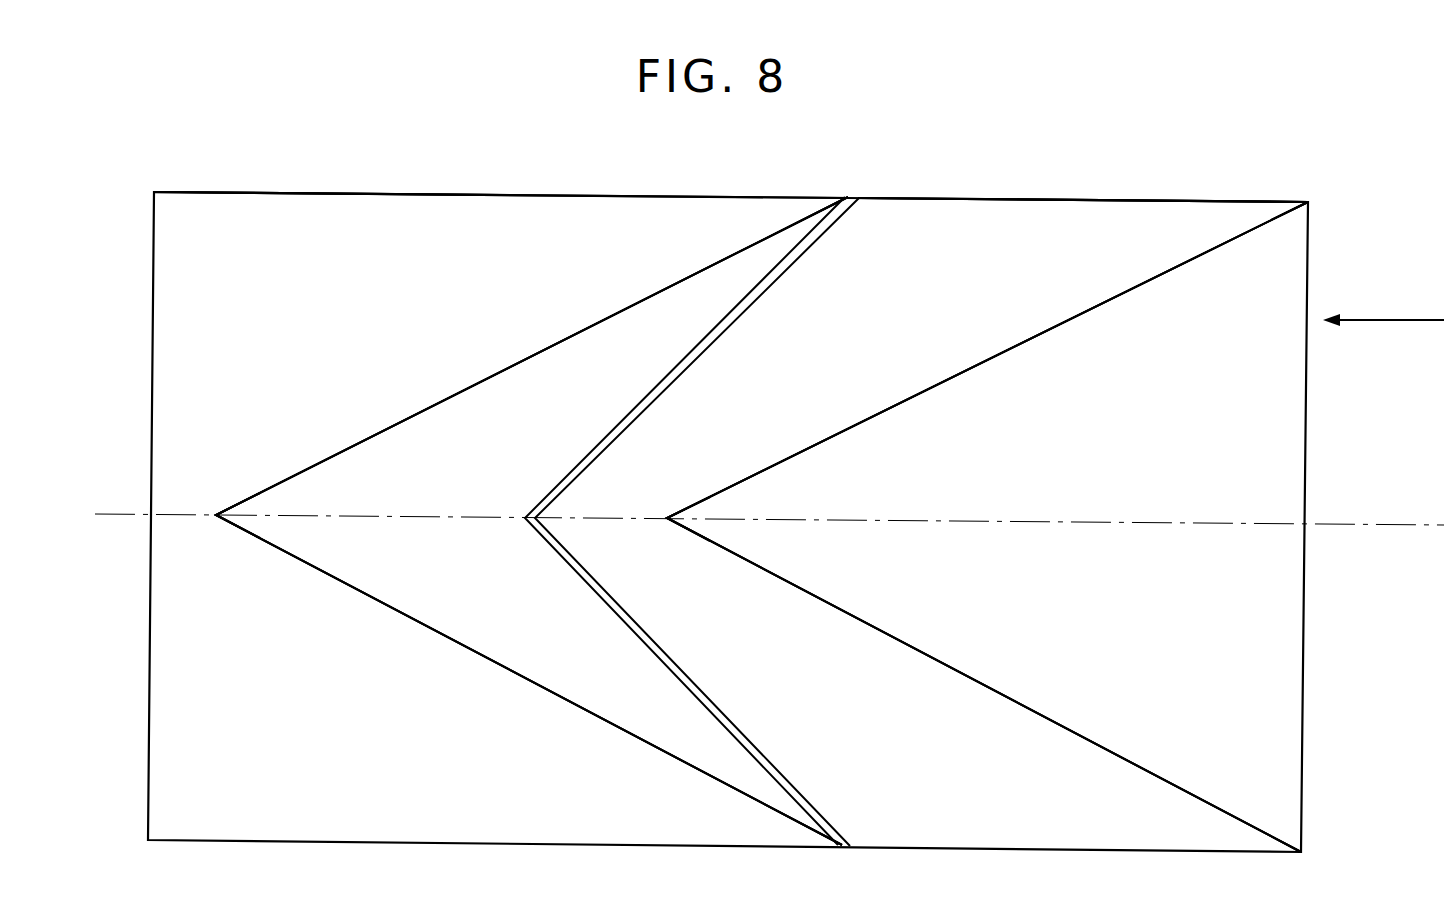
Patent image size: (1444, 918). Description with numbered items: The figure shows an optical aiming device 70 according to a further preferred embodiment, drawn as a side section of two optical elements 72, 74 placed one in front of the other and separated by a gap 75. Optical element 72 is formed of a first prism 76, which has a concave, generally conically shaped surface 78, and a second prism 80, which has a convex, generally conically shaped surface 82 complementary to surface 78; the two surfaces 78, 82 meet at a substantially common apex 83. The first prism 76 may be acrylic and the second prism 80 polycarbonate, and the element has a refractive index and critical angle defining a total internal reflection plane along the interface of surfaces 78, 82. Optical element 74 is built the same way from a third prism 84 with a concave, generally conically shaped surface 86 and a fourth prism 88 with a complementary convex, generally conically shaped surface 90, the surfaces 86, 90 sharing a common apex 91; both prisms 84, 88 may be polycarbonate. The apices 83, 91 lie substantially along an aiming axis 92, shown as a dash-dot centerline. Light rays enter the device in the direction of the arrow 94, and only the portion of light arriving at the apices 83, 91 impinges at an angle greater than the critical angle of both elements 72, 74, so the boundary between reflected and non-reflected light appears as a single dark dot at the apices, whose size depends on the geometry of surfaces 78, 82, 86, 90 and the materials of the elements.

The optical aiming device 70 is at (447, 150).
The optical element 72 is at (224, 180).
The optical element 74 is at (1058, 188).
The gap 75 is at (866, 183).
The first prism 76 is at (323, 205).
The concave generally conically shaped surface 78 is at (518, 363).
The second prism 80 is at (650, 313).
The convex generally conically shaped surface 82 is at (415, 416).
The apex 83 is at (214, 515).
The third prism 84 is at (1148, 215).
The concave generally conically shaped surface 86 is at (894, 405).
The fourth prism 88 is at (1145, 340).
The convex generally conically shaped surface 90 is at (1022, 343).
The apex 91 is at (666, 518).
The aiming axis 92 is at (1342, 525).
The arrow 94 is at (1402, 320).